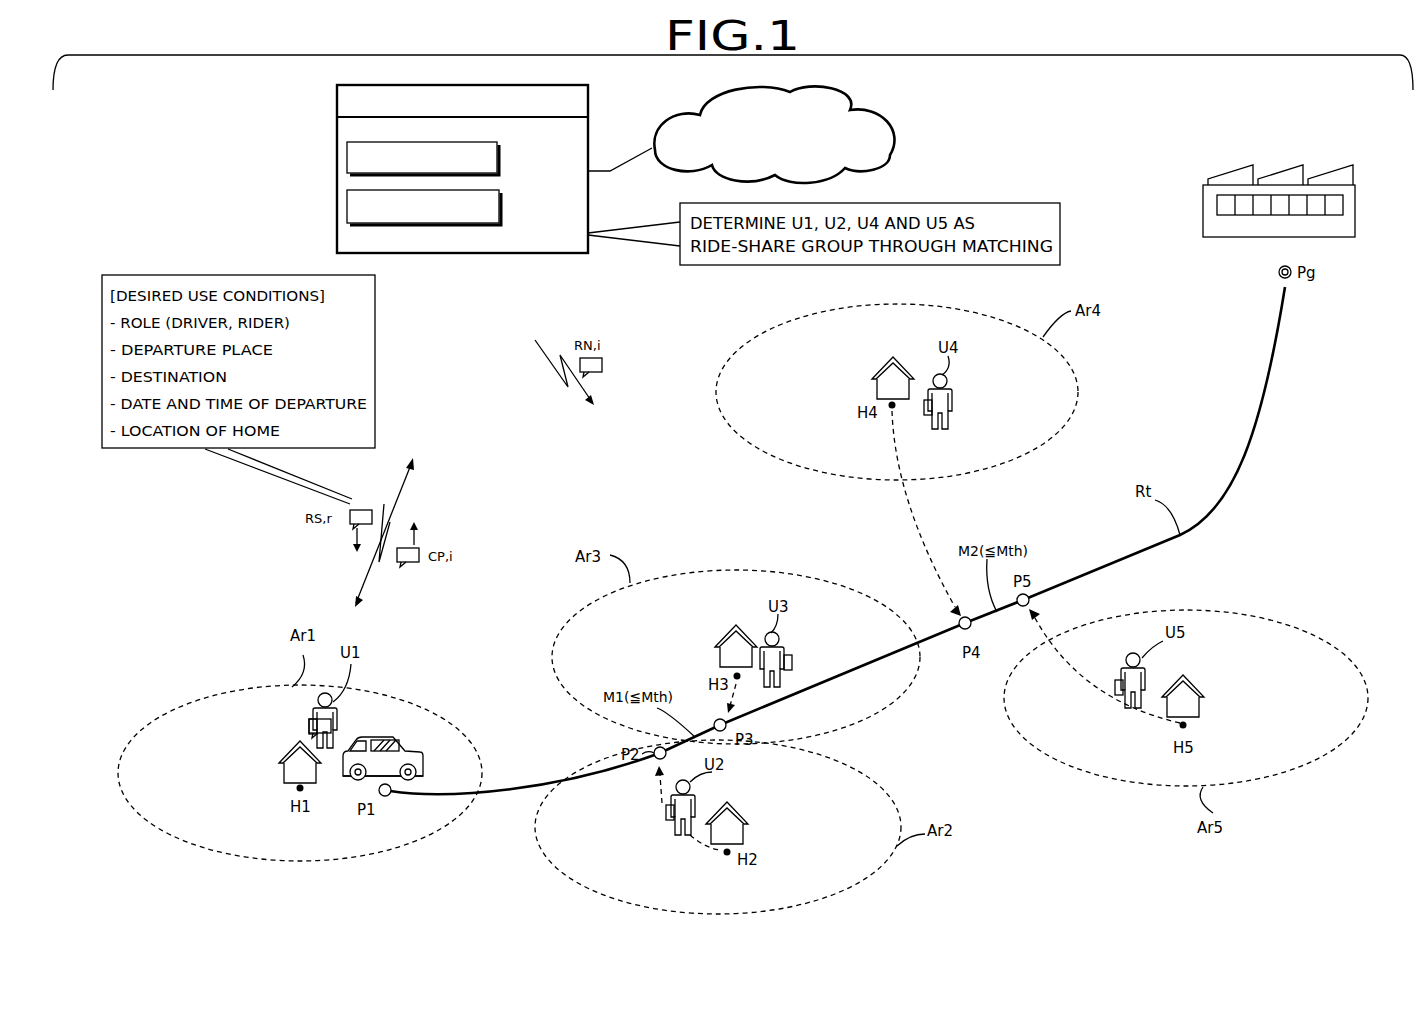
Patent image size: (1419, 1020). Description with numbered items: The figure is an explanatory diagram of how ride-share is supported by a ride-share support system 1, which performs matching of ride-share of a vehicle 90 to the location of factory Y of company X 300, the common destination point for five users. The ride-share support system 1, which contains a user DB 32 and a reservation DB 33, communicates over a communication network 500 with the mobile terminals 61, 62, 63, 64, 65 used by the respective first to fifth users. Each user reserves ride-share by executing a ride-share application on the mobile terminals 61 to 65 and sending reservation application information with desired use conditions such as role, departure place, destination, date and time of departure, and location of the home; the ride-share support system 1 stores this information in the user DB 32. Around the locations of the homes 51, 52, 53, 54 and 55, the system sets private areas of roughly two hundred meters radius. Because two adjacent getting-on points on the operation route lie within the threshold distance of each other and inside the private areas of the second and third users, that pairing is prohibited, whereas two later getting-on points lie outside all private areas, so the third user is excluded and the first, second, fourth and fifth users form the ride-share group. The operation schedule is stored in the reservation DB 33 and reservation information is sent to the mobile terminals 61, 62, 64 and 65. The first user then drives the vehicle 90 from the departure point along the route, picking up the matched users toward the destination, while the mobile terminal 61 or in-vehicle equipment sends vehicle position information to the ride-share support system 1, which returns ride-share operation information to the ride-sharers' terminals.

The ride-share support system 1 is at (337, 157).
The user DB 32 is at (500, 160).
The reservation DB 33 is at (501, 210).
The communication network 500 is at (862, 114).
The factory Y of company X 300 is at (1203, 199).
The home of the first user 51 is at (290, 748).
The home of the second user 52 is at (732, 816).
The home of the third user 53 is at (727, 631).
The home of the fourth user 54 is at (882, 368).
The home of the fifth user 55 is at (1191, 685).
The mobile terminal of the first user 61 is at (310, 727).
The mobile terminal of the second user 62 is at (665, 818).
The mobile terminal of the third user 63 is at (791, 668).
The mobile terminal of the fourth user 64 is at (926, 417).
The mobile terminal of the fifth user 65 is at (1117, 693).
The vehicle 90 is at (376, 737).